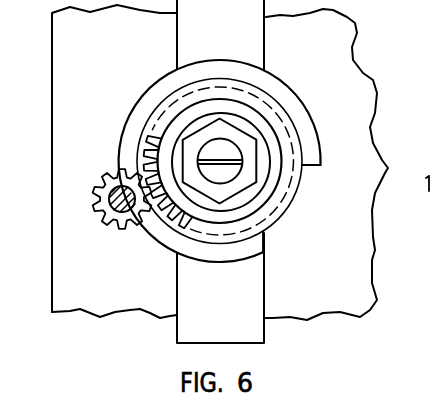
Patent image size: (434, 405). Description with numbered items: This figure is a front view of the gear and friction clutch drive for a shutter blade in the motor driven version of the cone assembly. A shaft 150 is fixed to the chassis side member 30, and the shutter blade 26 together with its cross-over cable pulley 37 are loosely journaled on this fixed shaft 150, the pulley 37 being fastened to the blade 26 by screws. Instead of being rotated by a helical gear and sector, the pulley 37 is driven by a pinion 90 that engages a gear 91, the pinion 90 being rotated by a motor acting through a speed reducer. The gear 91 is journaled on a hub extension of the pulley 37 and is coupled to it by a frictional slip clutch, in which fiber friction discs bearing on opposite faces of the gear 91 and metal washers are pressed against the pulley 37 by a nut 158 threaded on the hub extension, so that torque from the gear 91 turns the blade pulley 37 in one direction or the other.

The shutter blade 26 is at (265, 289).
The chassis side member 30 is at (375, 250).
The pulley 37 is at (311, 114).
The pinion 90 is at (110, 228).
The gear 91 is at (140, 230).
The shaft 150 is at (262, 167).
The nut 158 is at (270, 200).